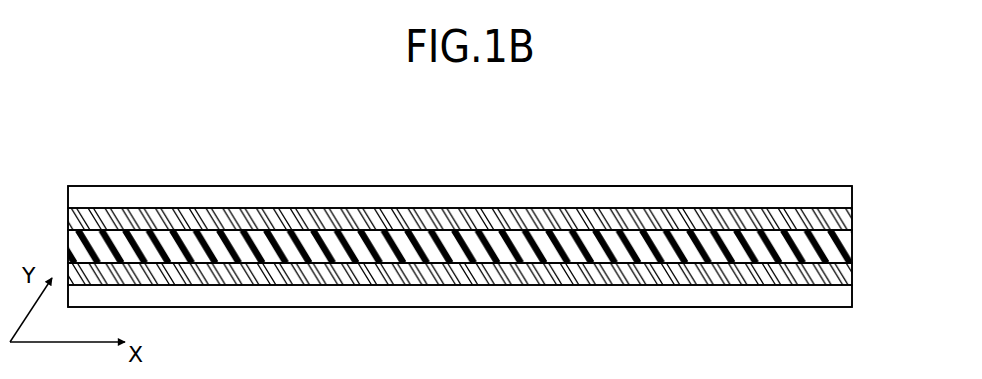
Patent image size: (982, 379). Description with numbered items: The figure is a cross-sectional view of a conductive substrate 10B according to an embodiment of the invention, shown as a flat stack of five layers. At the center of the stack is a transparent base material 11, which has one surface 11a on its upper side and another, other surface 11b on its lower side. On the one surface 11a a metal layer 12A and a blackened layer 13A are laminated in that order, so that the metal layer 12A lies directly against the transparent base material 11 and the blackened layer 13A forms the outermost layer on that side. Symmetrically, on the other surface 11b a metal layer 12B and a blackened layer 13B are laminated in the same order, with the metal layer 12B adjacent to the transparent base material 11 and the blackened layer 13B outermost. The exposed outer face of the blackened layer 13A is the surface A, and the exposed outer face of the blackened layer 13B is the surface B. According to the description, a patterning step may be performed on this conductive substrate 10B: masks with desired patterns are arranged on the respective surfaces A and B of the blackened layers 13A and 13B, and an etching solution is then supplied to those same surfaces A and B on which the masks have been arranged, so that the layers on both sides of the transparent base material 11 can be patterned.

The conductive substrate 10B is at (136, 162).
The transparent base material 11 is at (852, 247).
The one surface 11a is at (406, 227).
The other surface 11b is at (458, 266).
The metal layer 12A is at (852, 220).
The metal layer 12B is at (852, 275).
The blackened layer 13A is at (852, 198).
The blackened layer 13B is at (852, 297).
The surface A is at (696, 184).
The surface B is at (708, 310).